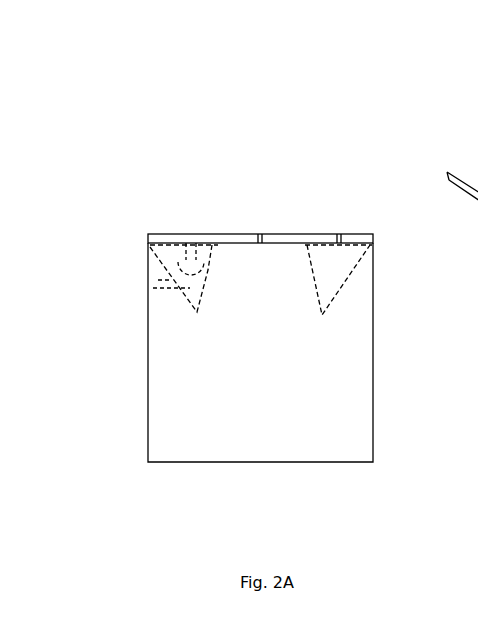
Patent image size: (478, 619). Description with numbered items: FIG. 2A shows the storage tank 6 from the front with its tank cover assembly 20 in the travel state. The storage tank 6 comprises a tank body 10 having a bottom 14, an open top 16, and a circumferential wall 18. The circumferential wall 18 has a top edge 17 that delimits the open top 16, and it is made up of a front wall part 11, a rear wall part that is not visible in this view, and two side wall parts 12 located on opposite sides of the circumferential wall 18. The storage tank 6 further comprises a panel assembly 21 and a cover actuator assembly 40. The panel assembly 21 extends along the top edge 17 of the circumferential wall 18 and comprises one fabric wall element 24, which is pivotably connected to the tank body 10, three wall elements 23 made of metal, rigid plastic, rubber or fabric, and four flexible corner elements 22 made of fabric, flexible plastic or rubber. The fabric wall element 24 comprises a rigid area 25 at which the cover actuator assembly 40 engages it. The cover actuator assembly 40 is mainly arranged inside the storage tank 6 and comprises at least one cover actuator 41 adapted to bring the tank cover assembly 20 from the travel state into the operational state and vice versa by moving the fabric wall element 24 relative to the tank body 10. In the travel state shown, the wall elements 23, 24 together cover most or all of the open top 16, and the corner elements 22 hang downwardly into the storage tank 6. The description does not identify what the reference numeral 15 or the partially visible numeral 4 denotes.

The storage tank 6 is at (130, 467).
The tank body 10 is at (137, 415).
The front wall part 11 is at (292, 413).
The side wall parts 12 is at (148, 300).
The bottom 14 is at (295, 463).
The region 15 is at (237, 400).
The open top 16 is at (294, 245).
The top edge 17 is at (249, 243).
The circumferential wall 18 is at (350, 453).
The tank cover assembly 20 is at (168, 129).
The panel assembly 21 is at (152, 211).
The corner elements 22 is at (162, 257).
The wall elements 23 is at (289, 243).
The fabric wall element 24 is at (168, 243).
The rigid area 25 is at (477, 227).
The cover actuator assembly 40 is at (183, 285).
The cover actuator 41 is at (200, 275).
The element 4 is at (475, 243).